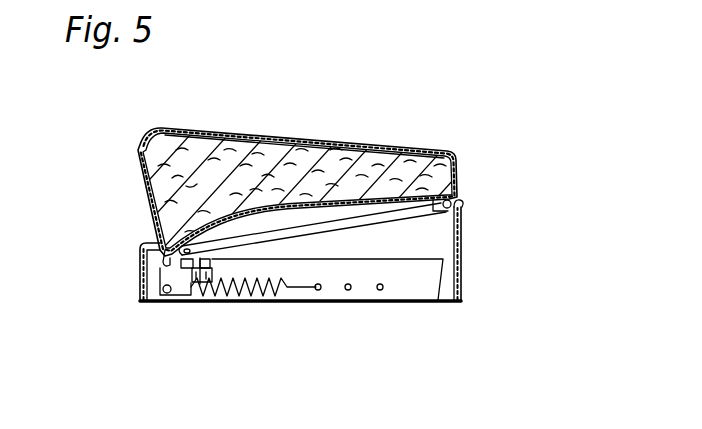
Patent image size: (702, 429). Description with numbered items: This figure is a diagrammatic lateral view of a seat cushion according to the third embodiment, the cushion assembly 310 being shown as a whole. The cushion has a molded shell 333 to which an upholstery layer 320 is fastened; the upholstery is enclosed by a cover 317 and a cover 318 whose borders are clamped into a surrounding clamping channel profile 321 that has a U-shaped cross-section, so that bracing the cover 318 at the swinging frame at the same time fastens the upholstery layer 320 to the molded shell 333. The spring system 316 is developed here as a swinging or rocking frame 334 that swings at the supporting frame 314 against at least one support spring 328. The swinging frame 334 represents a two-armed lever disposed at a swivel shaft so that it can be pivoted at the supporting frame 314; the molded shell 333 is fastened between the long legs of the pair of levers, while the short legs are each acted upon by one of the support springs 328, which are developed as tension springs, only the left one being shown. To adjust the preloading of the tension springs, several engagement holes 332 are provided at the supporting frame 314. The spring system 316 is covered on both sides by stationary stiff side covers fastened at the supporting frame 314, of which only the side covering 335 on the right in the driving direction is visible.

The container assembly 310 is at (349, 209).
The upholstery layer 320 is at (164, 128).
The cover 318 is at (243, 134).
The cover 317 is at (384, 134).
The clamping channel profile 321 is at (459, 197).
The side covering 335 is at (443, 226).
The supporting frame 314 is at (238, 313).
The spring system 316 is at (152, 274).
The molded shell 333 is at (267, 190).
The swinging frame 334 is at (306, 230).
The support spring 328 is at (267, 313).
The engagement holes 332 is at (349, 290).